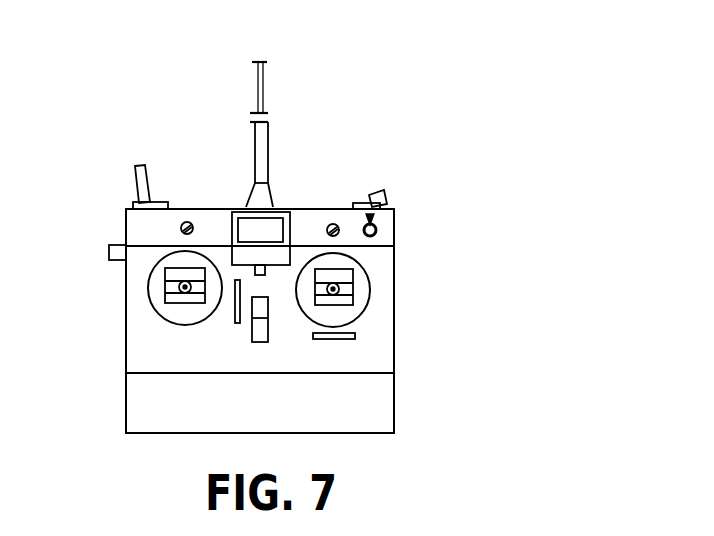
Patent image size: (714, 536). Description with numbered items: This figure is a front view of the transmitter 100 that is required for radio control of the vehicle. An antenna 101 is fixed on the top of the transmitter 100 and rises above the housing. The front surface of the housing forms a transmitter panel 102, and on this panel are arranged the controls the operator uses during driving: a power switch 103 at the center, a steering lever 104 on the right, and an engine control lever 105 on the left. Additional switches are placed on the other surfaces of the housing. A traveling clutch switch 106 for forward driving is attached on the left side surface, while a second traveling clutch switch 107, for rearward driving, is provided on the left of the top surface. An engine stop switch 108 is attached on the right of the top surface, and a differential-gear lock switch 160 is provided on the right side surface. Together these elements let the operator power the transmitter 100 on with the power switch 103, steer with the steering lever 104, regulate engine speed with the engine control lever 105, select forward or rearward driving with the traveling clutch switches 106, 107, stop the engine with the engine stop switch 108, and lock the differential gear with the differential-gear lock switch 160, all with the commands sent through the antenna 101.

The transmitter 100 is at (432, 138).
The antenna 101 is at (263, 80).
The transmitter panel 102 is at (260, 326).
The power switch 103 is at (297, 253).
The steering lever 104 is at (340, 290).
The engine control lever 105 is at (185, 277).
The traveling clutch switch 106 is at (112, 245).
The traveling clutch switch 107 is at (133, 165).
The engine stop switch 108 is at (385, 195).
The differential-gear lock switch 160 is at (378, 220).